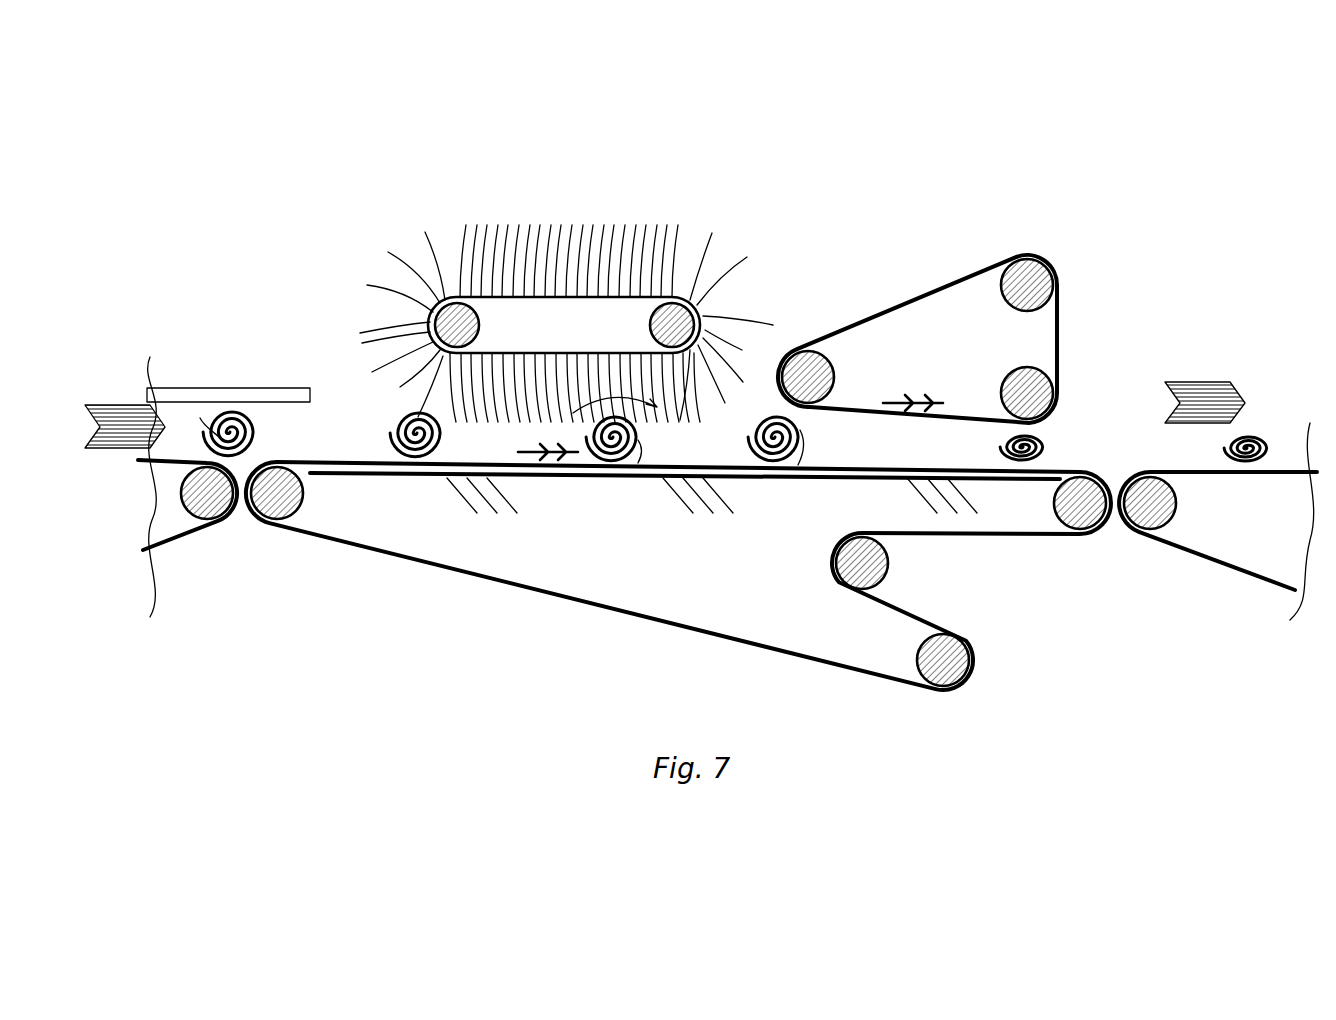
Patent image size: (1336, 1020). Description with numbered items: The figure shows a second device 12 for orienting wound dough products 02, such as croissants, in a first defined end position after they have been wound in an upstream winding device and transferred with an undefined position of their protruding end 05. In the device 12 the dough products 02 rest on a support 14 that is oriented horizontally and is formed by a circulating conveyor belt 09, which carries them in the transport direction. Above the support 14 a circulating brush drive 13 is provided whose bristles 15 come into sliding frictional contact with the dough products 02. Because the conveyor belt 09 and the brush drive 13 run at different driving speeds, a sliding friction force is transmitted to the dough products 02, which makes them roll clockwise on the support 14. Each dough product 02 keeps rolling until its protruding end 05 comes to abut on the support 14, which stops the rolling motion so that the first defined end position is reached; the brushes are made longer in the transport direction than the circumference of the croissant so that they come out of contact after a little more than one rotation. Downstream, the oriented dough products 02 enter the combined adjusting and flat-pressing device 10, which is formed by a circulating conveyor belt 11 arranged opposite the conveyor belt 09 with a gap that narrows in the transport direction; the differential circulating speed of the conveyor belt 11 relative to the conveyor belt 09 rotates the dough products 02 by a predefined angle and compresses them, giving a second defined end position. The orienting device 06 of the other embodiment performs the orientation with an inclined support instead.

The dough product 02 is at (387, 425).
The protruding end 05 is at (425, 409).
The device for orienting the dough products 06 is at (1190, 132).
The circulating conveyor belt 09 is at (487, 583).
The combined adjusting and flat-pressing device 10 is at (966, 306).
The circulating conveyor belt 11 is at (1060, 347).
The second device for orienting the dough products 12 is at (505, 262).
The circulating brush drive 13 is at (550, 297).
The support 14 is at (686, 451).
The bristles 15 is at (627, 255).